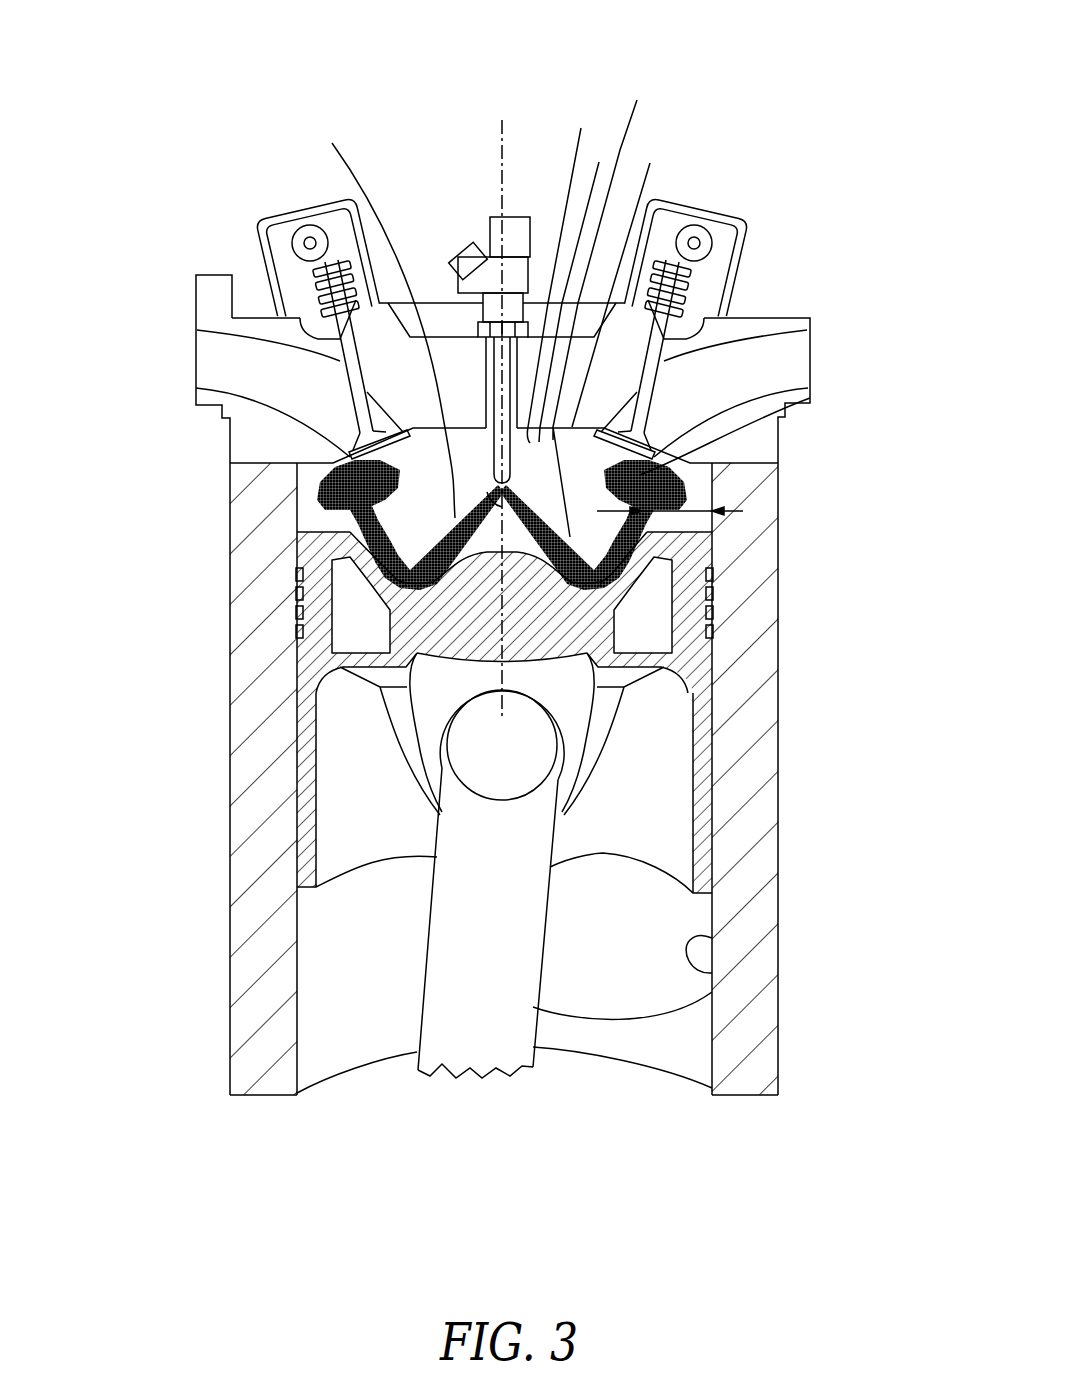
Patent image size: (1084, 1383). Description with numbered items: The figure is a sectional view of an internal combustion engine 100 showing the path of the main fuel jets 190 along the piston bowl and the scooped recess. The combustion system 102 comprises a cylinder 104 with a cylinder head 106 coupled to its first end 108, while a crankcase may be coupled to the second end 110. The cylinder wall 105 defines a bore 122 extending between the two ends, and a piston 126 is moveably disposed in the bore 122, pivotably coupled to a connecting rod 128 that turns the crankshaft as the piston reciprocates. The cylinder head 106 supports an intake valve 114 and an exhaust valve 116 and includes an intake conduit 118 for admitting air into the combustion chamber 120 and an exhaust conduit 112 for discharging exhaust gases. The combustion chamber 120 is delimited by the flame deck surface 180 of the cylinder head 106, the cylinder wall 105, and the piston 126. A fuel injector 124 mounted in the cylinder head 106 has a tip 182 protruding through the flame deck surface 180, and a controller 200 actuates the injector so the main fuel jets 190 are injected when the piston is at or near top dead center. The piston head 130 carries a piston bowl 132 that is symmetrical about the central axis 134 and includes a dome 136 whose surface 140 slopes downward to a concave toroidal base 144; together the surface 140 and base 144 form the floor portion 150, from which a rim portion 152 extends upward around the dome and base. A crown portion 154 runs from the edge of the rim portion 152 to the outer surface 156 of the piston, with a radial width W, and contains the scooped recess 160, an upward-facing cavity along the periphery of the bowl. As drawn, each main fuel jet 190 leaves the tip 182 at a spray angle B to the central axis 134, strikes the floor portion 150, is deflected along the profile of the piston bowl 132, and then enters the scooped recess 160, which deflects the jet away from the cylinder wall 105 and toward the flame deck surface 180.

The internal combustion engine 100 is at (790, 74).
The combustion system 102 is at (791, 481).
The cylinder 104 is at (780, 810).
The cylinder wall 105 is at (765, 858).
The cylinder head 106 is at (737, 330).
The first end 108 is at (770, 447).
The second end 110 is at (758, 1073).
The exhaust conduit 112 is at (777, 362).
The intake valve 114 is at (285, 272).
The exhaust valve 116 is at (683, 215).
The intake conduit 118 is at (237, 369).
The combustion chamber 120 is at (714, 483).
The bore 122 is at (712, 973).
The fuel injector 124 is at (533, 270).
The piston 126 is at (697, 694).
The connecting rod 128 is at (712, 992).
The piston head 130 is at (323, 548).
The piston bowl 132 is at (300, 654).
The central axis 134 is at (503, 178).
The dome 136 is at (376, 317).
The surface 140 is at (606, 297).
The base 144 is at (618, 279).
The floor portion 150 is at (690, 634).
The rim portion 152 is at (297, 558).
The crown portion 154 is at (690, 522).
The outer surface 156 is at (683, 575).
The scooped recess 160 is at (345, 531).
The flame deck surface 180 is at (577, 287).
The tip 182 is at (554, 270).
The main fuel jets 190 is at (316, 486).
The controller 200 is at (208, 297).